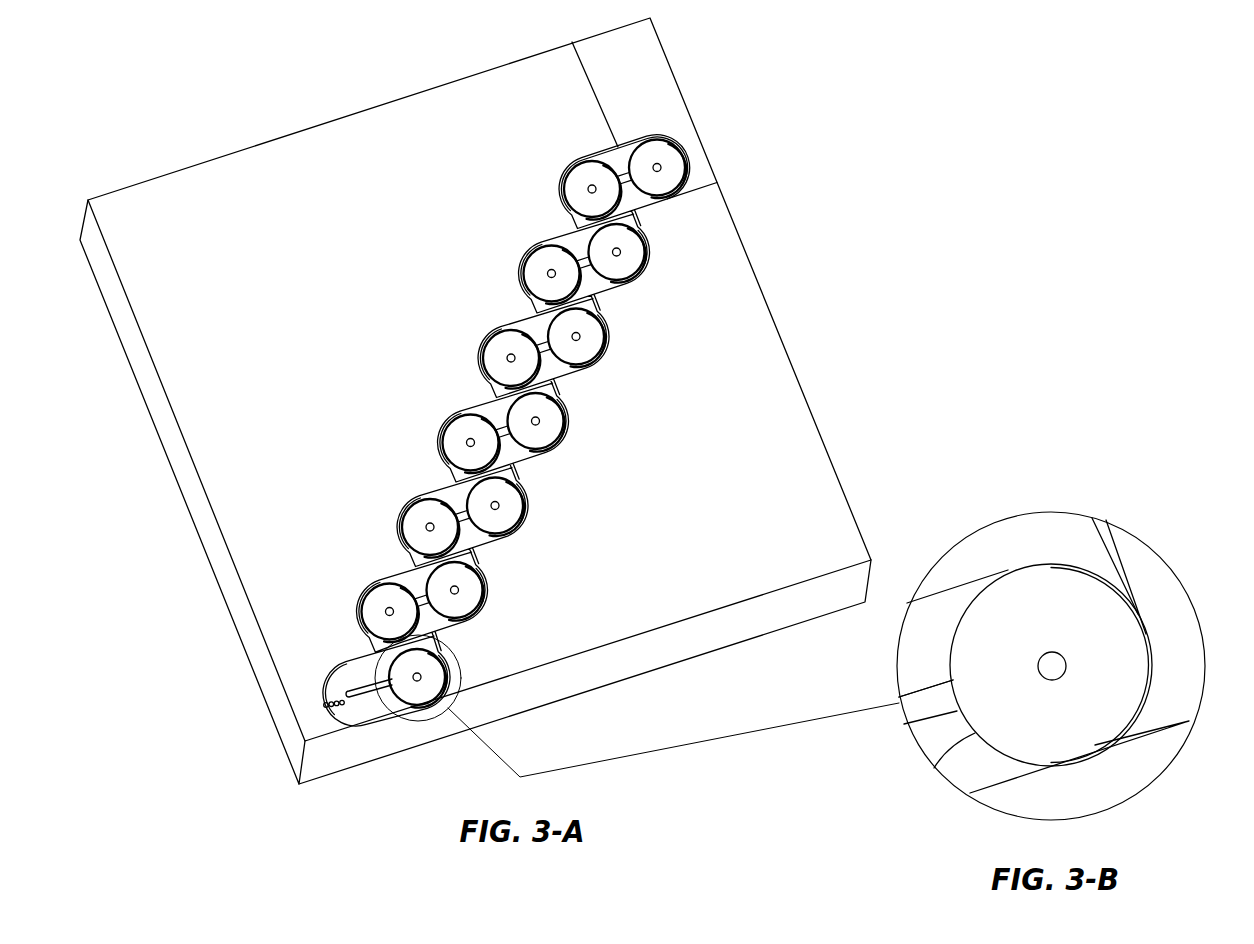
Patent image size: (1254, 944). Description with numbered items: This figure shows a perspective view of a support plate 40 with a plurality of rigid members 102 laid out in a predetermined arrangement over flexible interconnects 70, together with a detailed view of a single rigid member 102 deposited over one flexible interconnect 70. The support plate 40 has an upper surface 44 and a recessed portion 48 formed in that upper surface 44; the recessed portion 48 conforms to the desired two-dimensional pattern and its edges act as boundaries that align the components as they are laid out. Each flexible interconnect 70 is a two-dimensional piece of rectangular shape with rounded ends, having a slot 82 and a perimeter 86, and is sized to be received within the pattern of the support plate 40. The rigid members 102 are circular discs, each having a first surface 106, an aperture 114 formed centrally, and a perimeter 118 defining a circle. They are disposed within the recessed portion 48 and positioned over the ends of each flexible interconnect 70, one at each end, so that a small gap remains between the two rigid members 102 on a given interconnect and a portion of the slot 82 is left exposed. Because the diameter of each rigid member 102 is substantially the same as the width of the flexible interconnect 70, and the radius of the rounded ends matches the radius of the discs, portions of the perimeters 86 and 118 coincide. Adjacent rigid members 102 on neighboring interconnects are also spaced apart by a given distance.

In FIG. 3-A, the support plate 40 is at (829, 443).
In FIG. 3-A, the upper surface 44 is at (747, 330).
In FIG. 3-A, the recessed portion 48 is at (662, 100).
In FIG. 3-B, the recessed portion 48 is at (1050, 524).
In FIG. 3-A, the flexible interconnect 70 is at (553, 363).
In FIG. 3-B, the flexible interconnect 70 is at (928, 640).
In FIG. 3-B, the slot 82 is at (921, 715).
In FIG. 3-B, the perimeter 86 is at (993, 786).
In FIG. 3-A, the rigid member 102 is at (522, 267).
In FIG. 3-B, the rigid member 102 is at (1131, 647).
In FIG. 3-B, the first surface 106 is at (1109, 718).
In FIG. 3-B, the aperture 114 is at (1043, 652).
In FIG. 3-B, the perimeter 118 is at (968, 728).